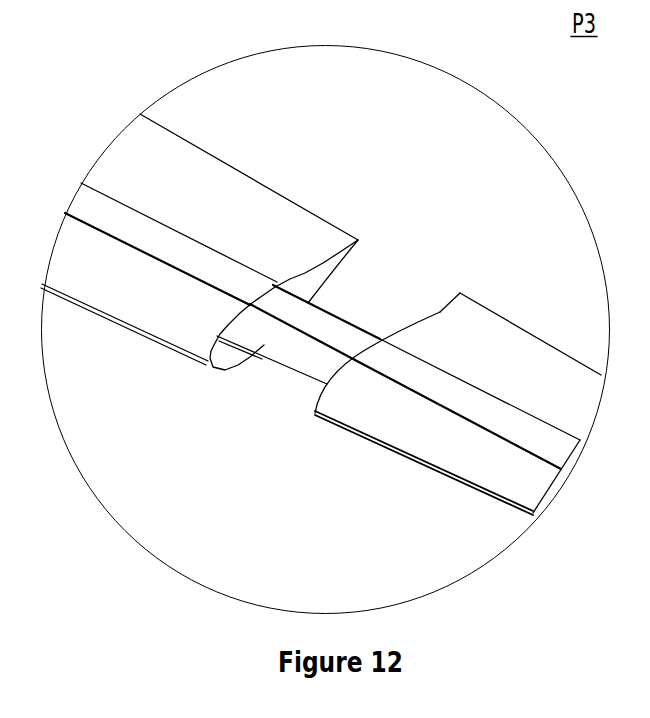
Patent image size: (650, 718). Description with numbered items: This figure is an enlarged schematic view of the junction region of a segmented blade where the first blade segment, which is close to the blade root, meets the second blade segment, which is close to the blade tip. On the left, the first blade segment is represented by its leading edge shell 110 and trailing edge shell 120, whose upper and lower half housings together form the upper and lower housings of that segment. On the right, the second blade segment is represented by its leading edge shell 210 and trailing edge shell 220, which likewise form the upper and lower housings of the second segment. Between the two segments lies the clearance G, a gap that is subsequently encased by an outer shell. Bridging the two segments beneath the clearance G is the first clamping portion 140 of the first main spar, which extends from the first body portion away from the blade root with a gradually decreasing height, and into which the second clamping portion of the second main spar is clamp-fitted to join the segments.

The leading edge shell 110 is at (175, 328).
The trailing edge shell 120 is at (268, 191).
The first clamping portion 140 is at (303, 351).
The leading edge shell 210 is at (430, 440).
The trailing edge shell 220 is at (490, 320).
The clearance G is at (397, 267).